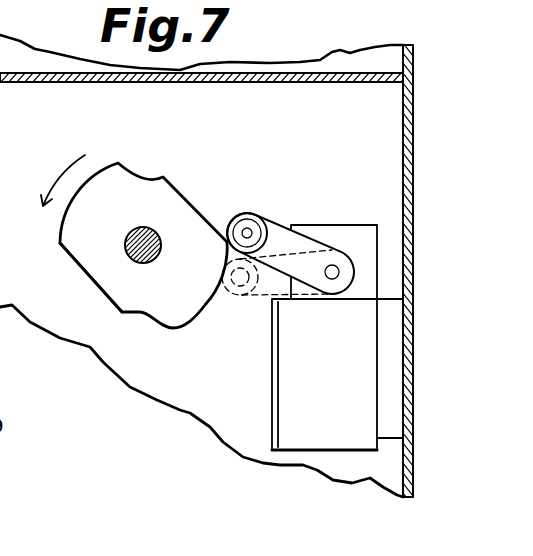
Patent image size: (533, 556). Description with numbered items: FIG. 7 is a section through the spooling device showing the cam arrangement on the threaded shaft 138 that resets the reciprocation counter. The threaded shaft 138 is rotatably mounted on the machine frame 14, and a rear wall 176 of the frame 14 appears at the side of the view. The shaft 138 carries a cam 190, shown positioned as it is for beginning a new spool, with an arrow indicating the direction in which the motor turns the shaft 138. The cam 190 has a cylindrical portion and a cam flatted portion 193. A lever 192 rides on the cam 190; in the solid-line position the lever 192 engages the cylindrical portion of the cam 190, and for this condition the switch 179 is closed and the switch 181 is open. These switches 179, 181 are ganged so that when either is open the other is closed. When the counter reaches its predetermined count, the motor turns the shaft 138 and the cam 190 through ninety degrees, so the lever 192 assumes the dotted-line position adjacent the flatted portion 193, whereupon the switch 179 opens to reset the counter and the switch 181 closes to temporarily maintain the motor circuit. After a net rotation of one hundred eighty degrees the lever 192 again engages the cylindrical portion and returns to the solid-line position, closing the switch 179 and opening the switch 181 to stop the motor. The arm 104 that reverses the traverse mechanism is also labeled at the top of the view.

The arm 104 is at (0, 9).
The machine frame 14 is at (298, 76).
The rear wall 176 is at (403, 132).
The threaded shaft 138 is at (148, 236).
The cam 190 is at (82, 252).
The cam flatted portion 193 is at (105, 307).
The lever 192 is at (278, 226).
The switch 179 is at (310, 401).
The switch 181 is at (324, 422).